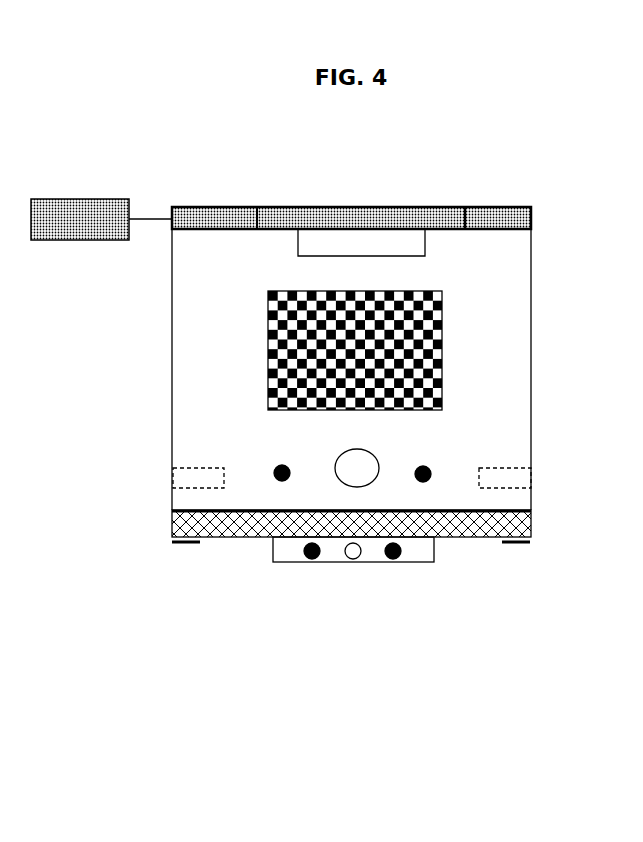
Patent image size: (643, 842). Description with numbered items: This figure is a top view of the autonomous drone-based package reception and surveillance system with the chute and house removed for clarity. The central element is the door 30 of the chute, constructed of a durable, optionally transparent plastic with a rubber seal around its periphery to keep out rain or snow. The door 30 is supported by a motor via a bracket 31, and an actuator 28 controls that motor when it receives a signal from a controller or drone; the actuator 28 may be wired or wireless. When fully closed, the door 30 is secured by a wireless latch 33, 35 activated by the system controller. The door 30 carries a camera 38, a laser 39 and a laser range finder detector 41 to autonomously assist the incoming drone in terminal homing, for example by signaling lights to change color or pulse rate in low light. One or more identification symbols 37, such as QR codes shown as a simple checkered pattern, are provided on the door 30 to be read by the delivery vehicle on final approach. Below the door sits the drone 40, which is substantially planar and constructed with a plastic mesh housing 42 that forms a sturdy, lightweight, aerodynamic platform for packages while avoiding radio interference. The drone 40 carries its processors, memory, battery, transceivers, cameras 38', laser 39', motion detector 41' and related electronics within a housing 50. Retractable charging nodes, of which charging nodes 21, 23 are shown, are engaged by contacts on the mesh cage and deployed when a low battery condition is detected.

The actuator 28 is at (83, 207).
The door 30 is at (298, 369).
The bracket 31 is at (417, 248).
The identification symbols 37 is at (442, 351).
The wireless latch 33 is at (185, 482).
The wireless latch 35 is at (518, 482).
The camera 38 is at (477, 447).
The laser 39 is at (250, 449).
The laser range finder detector 41 is at (456, 451).
The drone 40 is at (537, 524).
The charging node 21 is at (187, 545).
The charging node 23 is at (520, 545).
The housing 50 is at (283, 556).
The laser 39' is at (297, 638).
The cameras 38' is at (352, 655).
The motion detector 41' is at (417, 639).
The mesh housing 42 is at (448, 545).